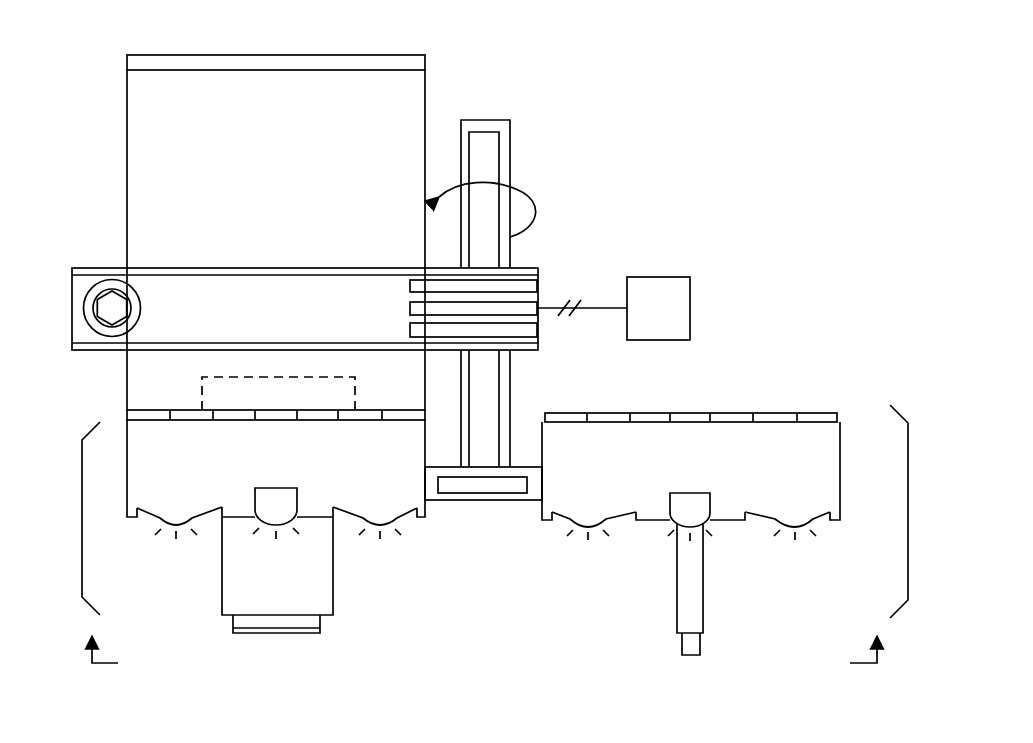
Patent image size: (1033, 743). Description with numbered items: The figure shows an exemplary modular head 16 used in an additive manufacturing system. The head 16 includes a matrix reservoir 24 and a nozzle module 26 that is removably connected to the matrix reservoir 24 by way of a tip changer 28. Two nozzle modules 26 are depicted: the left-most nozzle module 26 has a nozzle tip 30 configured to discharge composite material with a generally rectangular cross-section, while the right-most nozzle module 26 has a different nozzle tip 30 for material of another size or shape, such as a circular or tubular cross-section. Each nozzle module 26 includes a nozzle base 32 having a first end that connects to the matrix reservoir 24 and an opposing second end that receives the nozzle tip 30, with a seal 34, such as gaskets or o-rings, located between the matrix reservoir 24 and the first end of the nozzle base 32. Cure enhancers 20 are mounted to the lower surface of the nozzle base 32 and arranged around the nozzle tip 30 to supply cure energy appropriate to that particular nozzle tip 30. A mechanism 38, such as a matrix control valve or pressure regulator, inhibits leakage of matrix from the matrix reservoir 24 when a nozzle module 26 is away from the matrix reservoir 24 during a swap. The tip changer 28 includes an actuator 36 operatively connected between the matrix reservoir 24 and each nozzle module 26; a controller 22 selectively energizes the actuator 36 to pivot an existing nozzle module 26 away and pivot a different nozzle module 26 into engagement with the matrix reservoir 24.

The head 16 is at (83, 59).
The cure enhancer 20 is at (165, 519).
The controller 22 is at (647, 322).
The matrix reservoir 24 is at (287, 185).
The nozzle module 26 is at (82, 521).
The tip changer 28 is at (497, 94).
The nozzle tip 30 is at (287, 581).
The nozzle base 32 is at (287, 474).
The seal 34 is at (418, 414).
The actuator 36 is at (537, 267).
The mechanism 38 is at (290, 406).